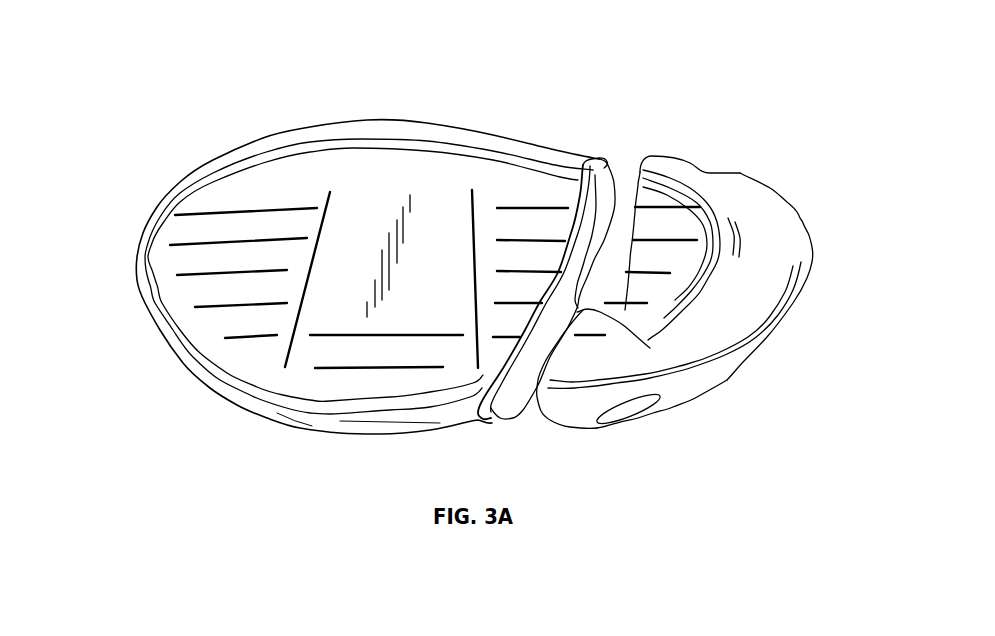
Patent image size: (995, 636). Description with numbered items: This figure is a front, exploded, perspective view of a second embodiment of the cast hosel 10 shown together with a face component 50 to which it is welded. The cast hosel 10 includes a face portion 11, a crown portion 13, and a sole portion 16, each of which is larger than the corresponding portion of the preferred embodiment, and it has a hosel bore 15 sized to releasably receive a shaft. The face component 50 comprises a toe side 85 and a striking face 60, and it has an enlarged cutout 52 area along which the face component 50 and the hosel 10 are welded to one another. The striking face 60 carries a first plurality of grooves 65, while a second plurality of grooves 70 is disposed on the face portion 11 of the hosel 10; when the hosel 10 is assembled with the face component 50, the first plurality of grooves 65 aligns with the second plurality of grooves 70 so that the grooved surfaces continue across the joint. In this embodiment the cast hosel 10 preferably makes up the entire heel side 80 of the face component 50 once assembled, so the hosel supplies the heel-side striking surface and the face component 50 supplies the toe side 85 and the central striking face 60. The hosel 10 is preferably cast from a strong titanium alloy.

The cast hosel 10 is at (806, 224).
The face portion 11 is at (656, 206).
The crown portion 13 is at (699, 169).
The hosel bore 15 is at (768, 189).
The sole portion 16 is at (647, 413).
The face component 50 is at (211, 121).
The cutout 52 is at (650, 348).
The striking face 60 is at (374, 172).
The first plurality of grooves 65 is at (558, 235).
The second plurality of grooves 70 is at (657, 243).
The heel side 80 is at (812, 261).
The toe side 85 is at (137, 225).